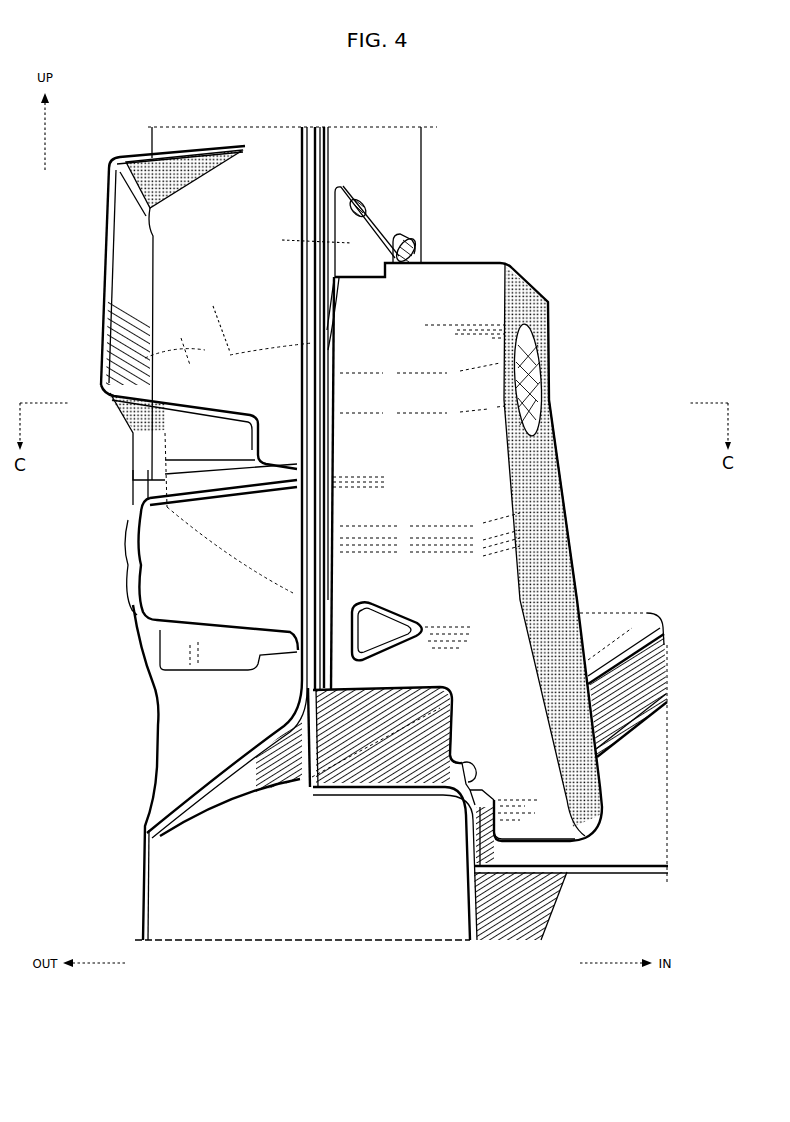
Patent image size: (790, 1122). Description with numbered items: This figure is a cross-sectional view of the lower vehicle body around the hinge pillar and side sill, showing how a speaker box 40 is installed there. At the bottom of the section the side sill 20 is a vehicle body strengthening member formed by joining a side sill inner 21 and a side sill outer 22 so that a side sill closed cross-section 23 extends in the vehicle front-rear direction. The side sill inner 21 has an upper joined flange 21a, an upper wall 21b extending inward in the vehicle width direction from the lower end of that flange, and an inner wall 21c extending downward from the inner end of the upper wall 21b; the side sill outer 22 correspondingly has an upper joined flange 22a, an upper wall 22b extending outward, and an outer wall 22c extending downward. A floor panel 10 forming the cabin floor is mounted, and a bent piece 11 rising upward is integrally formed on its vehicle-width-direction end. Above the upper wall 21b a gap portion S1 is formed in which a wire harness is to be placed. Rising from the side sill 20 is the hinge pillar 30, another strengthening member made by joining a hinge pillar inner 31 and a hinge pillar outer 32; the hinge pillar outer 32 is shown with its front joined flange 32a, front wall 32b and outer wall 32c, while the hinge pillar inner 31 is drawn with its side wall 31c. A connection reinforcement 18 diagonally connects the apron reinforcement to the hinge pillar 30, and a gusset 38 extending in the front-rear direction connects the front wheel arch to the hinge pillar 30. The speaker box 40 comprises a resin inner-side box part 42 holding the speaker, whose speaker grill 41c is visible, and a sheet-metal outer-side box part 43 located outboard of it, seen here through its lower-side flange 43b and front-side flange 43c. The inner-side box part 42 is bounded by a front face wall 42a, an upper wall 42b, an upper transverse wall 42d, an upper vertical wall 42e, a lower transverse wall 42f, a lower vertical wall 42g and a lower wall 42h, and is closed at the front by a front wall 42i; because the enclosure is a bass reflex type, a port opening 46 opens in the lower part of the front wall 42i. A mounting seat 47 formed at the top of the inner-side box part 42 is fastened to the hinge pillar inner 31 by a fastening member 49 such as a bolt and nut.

The floor panel 10 is at (626, 866).
The bent piece 11 is at (614, 728).
The connection reinforcement 18 is at (105, 280).
The side sill 20 is at (488, 923).
The side sill inner 21 is at (488, 903).
The upper joined flange 21a is at (345, 770).
The upper wall 21b is at (410, 800).
The inner wall 21c is at (470, 889).
The side sill outer 22 is at (134, 869).
The upper joined flange 22a is at (290, 724).
The upper wall 22b is at (218, 808).
The outer wall 22c is at (156, 920).
The side sill closed cross-section 23 is at (265, 889).
The hinge pillar 30 is at (422, 144).
The hinge pillar inner 31 is at (332, 153).
The side wall of pillar inner 31c is at (400, 186).
The hinge pillar outer 32 is at (296, 188).
The front joined flange 32a is at (304, 281).
The front wall 32b is at (191, 237).
The outer wall 32c is at (152, 140).
The gusset 38 is at (135, 560).
The speaker box 40 is at (586, 518).
The speaker grill 41c is at (532, 372).
The inner-side box part 42 is at (568, 464).
The front face wall 42a is at (566, 562).
The upper wall 42b is at (472, 262).
The upper transverse wall 42d is at (420, 690).
The upper vertical wall 42e is at (456, 722).
The lower transverse wall 42f is at (474, 770).
The lower vertical wall 42g is at (486, 792).
The lower wall 42h is at (590, 836).
The front wall 42i is at (424, 504).
The outer-side box part 43 is at (206, 397).
The lower-side flange 43b is at (298, 684).
The front-side flange 43c is at (326, 448).
The port opening 46 is at (403, 620).
The mounting seat 47 is at (408, 235).
The fastening member 49 is at (362, 200).
The gap portion S1 is at (391, 775).